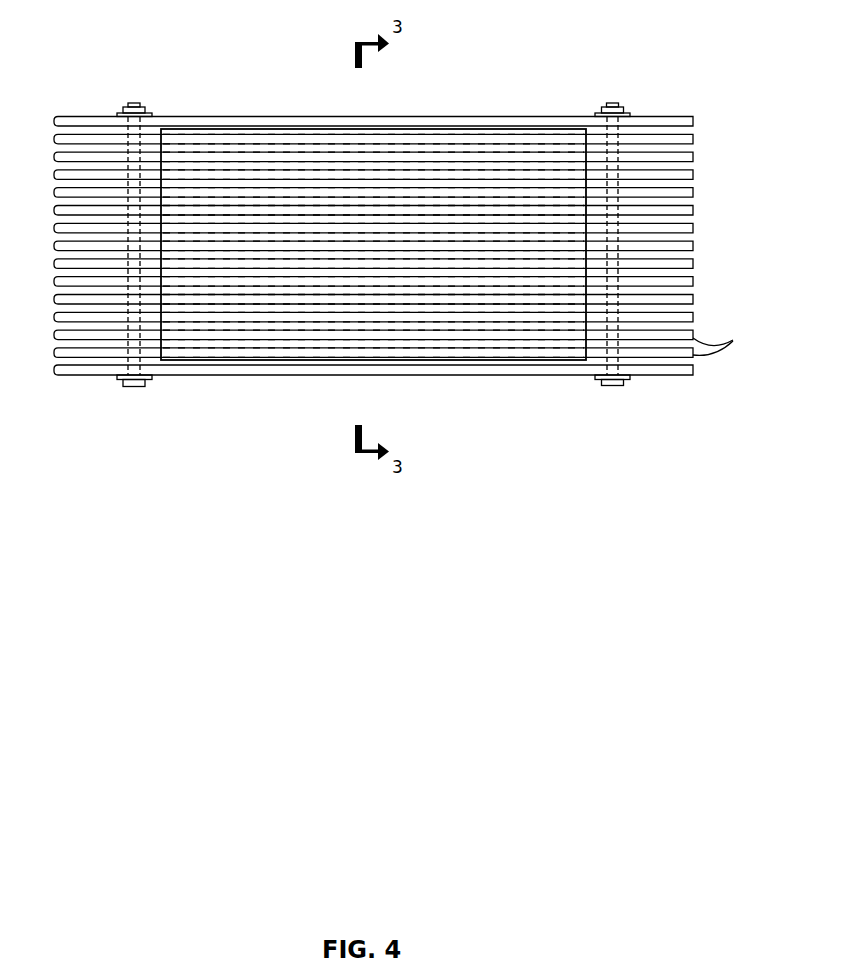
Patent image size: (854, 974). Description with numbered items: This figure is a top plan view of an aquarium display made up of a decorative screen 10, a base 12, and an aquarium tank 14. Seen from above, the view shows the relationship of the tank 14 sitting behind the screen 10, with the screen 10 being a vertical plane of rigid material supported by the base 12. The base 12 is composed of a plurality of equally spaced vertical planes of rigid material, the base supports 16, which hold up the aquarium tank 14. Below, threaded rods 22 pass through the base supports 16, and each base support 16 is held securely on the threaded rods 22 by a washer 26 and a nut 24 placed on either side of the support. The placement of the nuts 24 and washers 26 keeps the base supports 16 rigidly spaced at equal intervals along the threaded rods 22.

The aquarium screen 10 is at (222, 376).
The base 12 is at (699, 267).
The aquarium tank 14 is at (553, 129).
The base supports 16 is at (726, 340).
The threaded rods 22 is at (613, 386).
The nuts for rods 24 is at (623, 380).
The washers 26 is at (596, 377).